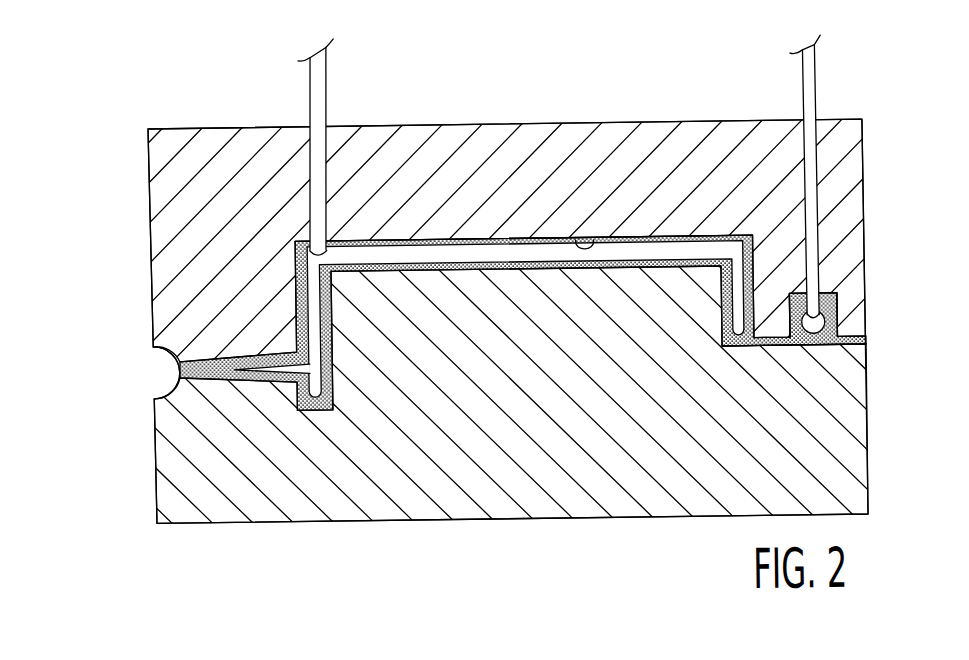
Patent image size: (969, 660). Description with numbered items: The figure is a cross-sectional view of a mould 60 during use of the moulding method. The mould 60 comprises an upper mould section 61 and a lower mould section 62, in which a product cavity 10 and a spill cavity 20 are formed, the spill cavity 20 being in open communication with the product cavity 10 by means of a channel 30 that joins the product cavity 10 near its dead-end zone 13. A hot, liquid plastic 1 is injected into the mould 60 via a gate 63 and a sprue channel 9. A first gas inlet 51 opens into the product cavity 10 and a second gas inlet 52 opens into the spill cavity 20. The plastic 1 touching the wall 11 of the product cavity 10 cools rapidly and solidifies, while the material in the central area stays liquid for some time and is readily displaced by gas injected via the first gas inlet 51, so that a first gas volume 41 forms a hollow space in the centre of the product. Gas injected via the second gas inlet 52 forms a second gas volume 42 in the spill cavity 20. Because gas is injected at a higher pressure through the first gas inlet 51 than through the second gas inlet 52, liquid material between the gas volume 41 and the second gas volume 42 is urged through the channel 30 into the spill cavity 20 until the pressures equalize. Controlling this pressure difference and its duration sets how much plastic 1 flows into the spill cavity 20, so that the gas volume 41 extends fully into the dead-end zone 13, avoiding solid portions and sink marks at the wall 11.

The plastic 1 is at (366, 243).
The sprue channel 9 is at (220, 375).
The product cavity 10 is at (508, 247).
The wall 11 is at (588, 243).
The dead-end zone 13 is at (710, 328).
The spill cavity 20 is at (788, 303).
The channel 30 is at (767, 354).
The gas volume 41 is at (374, 262).
The second gas volume 42 is at (822, 354).
The first gas inlet 51 is at (296, 260).
The second gas inlet 52 is at (835, 304).
The mould 60 is at (135, 117).
The upper mould section 61 is at (149, 239).
The lower mould section 62 is at (151, 446).
The gate 63 is at (164, 370).